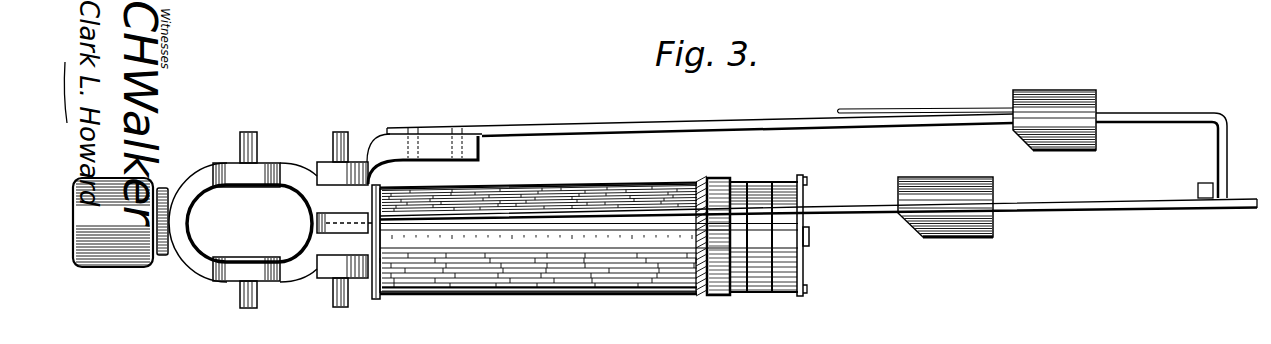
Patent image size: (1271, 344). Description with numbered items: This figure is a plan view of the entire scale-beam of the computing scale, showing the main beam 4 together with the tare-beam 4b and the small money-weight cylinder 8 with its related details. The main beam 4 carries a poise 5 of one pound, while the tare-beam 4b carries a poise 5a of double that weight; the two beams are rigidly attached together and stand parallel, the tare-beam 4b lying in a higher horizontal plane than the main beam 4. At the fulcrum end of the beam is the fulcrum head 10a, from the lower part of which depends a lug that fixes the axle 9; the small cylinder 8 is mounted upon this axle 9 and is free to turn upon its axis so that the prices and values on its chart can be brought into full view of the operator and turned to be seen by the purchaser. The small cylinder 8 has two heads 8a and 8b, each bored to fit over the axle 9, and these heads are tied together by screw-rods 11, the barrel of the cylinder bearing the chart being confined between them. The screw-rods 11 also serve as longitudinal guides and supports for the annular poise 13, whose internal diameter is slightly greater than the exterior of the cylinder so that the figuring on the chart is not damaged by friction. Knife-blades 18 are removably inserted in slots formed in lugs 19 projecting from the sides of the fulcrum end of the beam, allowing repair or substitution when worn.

The main beam 4 is at (694, 125).
The tare-beam 4b is at (1092, 194).
The poise 5 is at (1120, 144).
The poise 5a is at (945, 207).
The small money-weight cylinder 8 is at (546, 265).
The head 8a is at (804, 190).
The head 8b is at (375, 272).
The axle 9 is at (811, 236).
The fulcrum head 10a is at (270, 222).
The screw-rods 11 is at (672, 177).
The annular poise 13 is at (719, 297).
The knife-blades 18 is at (257, 146).
The lugs 19 is at (240, 140).